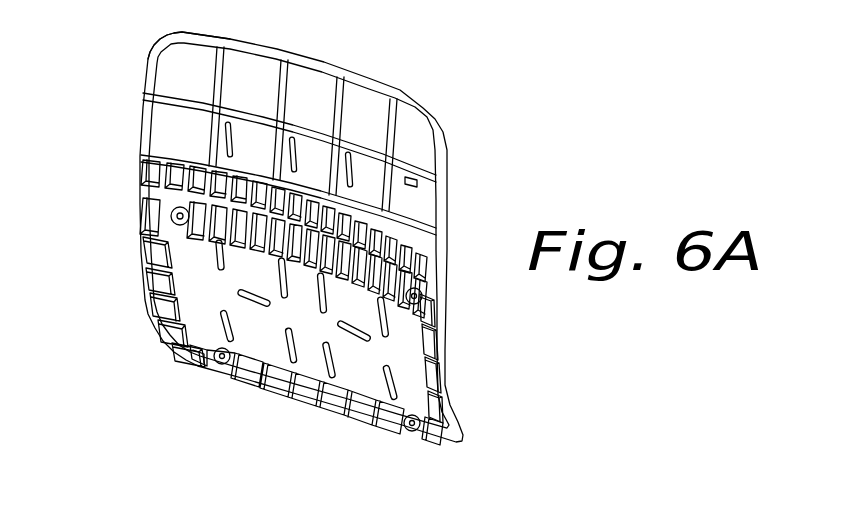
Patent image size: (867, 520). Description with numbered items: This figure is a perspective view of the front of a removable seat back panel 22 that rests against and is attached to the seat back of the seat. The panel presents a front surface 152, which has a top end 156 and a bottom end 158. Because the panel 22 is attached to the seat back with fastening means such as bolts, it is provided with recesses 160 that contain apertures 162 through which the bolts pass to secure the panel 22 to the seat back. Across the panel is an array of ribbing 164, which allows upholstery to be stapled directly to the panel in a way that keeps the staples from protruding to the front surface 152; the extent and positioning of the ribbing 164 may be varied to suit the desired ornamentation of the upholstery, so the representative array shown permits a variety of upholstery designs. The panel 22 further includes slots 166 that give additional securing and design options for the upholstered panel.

The seat back panel 22 is at (561, 336).
The front surface 152 is at (192, 278).
The top end 156 is at (318, 62).
The bottom end 158 is at (305, 390).
The recesses 160 is at (188, 232).
The apertures 162 is at (171, 216).
The ribbing 164 is at (152, 62).
The slots 166 is at (248, 305).